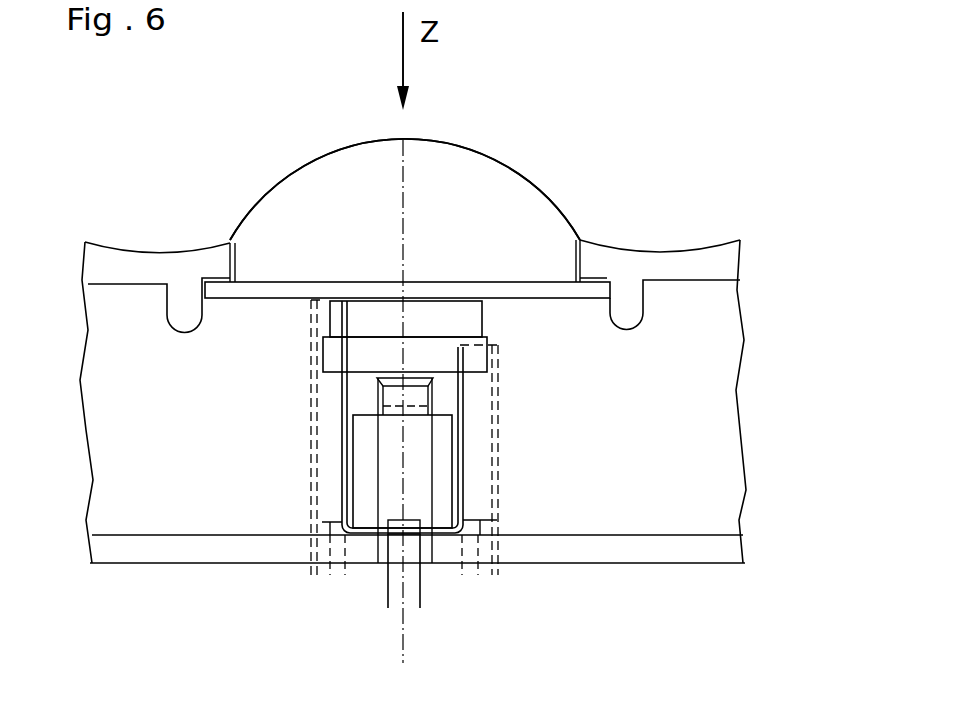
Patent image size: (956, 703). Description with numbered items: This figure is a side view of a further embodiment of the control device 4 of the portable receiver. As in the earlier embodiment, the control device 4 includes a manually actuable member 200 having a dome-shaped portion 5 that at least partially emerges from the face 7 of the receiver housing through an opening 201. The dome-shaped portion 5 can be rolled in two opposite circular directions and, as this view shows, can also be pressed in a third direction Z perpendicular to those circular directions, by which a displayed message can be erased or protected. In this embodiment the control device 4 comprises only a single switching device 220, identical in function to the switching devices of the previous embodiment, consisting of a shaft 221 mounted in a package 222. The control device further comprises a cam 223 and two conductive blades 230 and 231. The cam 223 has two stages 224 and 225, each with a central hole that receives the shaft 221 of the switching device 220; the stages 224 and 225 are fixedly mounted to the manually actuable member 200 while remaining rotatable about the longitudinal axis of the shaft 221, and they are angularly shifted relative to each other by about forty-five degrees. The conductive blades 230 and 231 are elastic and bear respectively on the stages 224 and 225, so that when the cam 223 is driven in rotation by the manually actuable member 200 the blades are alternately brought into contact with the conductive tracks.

The control device 4 is at (545, 108).
The dome-shaped portion 5 is at (540, 192).
The face 7 is at (112, 262).
The manually actuable member 200 is at (330, 178).
The opening 201 is at (222, 218).
The switching device 220 is at (443, 440).
The shaft 221 is at (418, 408).
The package 222 is at (448, 518).
The cam 223 is at (295, 333).
The first stage 224 is at (470, 323).
The second stage 225 is at (443, 357).
The first conductive blade 230 is at (348, 410).
The second conductive blade 231 is at (458, 487).